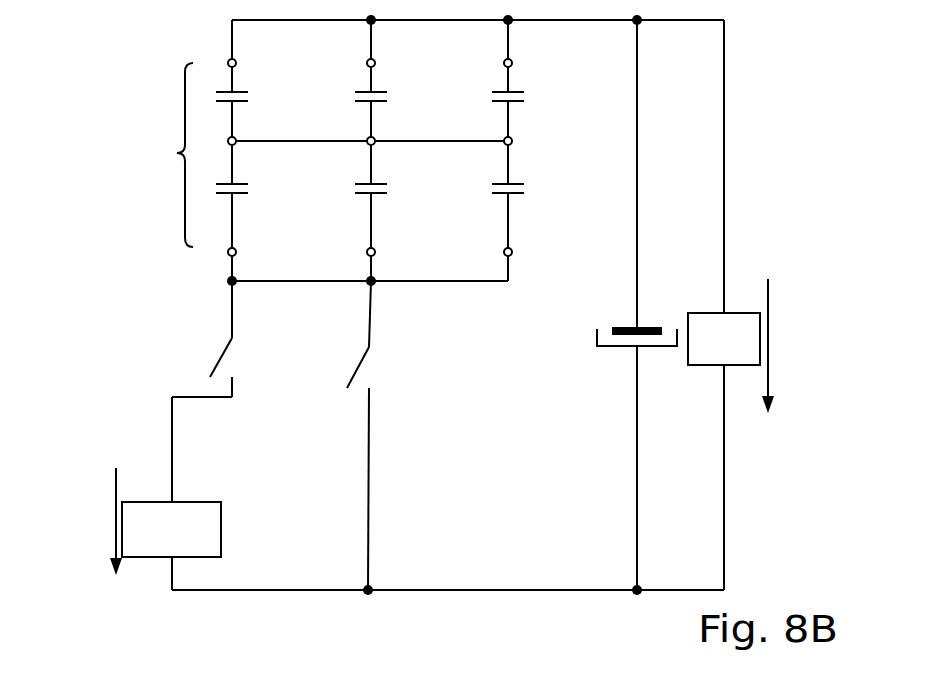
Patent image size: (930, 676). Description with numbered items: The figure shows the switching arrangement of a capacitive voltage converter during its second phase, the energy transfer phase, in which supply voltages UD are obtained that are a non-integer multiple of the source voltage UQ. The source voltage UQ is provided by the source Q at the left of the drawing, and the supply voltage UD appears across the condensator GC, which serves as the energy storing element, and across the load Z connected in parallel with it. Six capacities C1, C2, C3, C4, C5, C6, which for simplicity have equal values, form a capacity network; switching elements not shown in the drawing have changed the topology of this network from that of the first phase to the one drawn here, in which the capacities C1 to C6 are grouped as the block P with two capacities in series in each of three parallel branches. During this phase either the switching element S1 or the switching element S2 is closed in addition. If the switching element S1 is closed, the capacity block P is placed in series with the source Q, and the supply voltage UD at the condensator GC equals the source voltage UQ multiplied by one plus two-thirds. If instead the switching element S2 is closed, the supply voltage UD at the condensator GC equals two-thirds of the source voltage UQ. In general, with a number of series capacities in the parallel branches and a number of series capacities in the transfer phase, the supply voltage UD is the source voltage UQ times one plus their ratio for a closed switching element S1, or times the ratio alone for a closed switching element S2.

The capacity C1 is at (289, 84).
The capacity C2 is at (287, 177).
The capacity C3 is at (426, 84).
The capacity C4 is at (426, 177).
The capacity C5 is at (563, 84).
The capacity C6 is at (564, 177).
The capacitor group P is at (176, 155).
The switching element S1 is at (167, 391).
The switching element S2 is at (309, 435).
The condensator GC is at (595, 322).
The load Z is at (724, 339).
The source Q is at (171, 546).
The supply voltage UD is at (812, 346).
The source voltage UQ is at (74, 521).